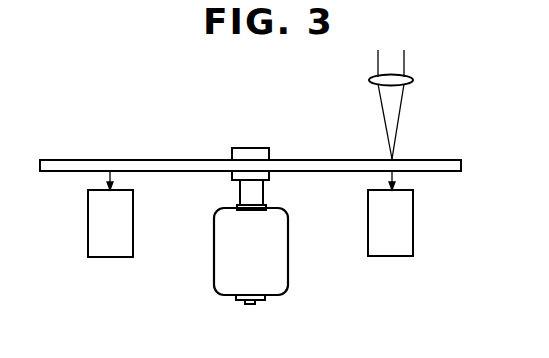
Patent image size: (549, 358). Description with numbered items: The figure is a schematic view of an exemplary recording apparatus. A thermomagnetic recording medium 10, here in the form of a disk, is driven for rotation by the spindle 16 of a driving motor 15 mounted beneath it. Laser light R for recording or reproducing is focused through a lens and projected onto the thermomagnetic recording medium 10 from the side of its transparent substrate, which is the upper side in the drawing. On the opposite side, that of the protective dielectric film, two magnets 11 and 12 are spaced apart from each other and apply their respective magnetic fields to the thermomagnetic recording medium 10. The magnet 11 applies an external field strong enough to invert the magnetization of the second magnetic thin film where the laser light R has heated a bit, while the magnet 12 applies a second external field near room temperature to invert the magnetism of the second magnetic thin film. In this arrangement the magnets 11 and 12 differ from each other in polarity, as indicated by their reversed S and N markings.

The thermomagnetic recording medium 10 is at (78, 147).
The magnet 11 is at (413, 228).
The magnet 12 is at (131, 255).
The driving motor 15 is at (280, 277).
The spindle 16 is at (253, 192).
The laser light R is at (395, 119).